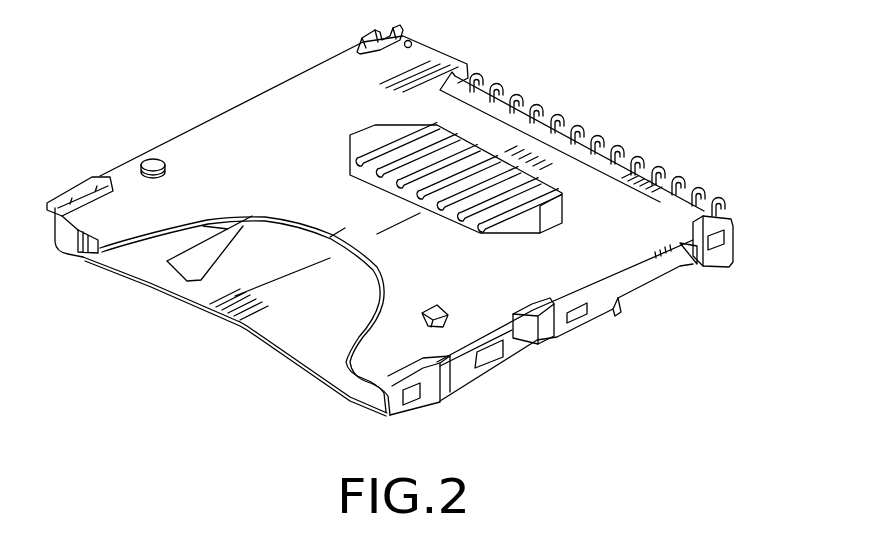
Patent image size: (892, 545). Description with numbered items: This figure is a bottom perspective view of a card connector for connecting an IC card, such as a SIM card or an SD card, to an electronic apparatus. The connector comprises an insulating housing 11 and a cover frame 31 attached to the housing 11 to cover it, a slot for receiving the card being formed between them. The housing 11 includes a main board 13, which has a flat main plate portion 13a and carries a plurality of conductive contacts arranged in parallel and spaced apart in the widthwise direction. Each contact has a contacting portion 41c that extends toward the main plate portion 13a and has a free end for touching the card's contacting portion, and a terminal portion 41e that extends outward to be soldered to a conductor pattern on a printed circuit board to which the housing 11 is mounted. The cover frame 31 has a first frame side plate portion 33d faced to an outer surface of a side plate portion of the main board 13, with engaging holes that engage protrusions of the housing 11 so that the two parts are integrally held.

The insulating housing 11 is at (243, 97).
The main board 13 is at (353, 398).
The main plate portion 13a is at (617, 243).
The cover frame 31 is at (240, 322).
The first frame side plate portion 33d is at (527, 340).
The contacting portion 41c is at (455, 195).
The terminal portion 41e is at (480, 72).